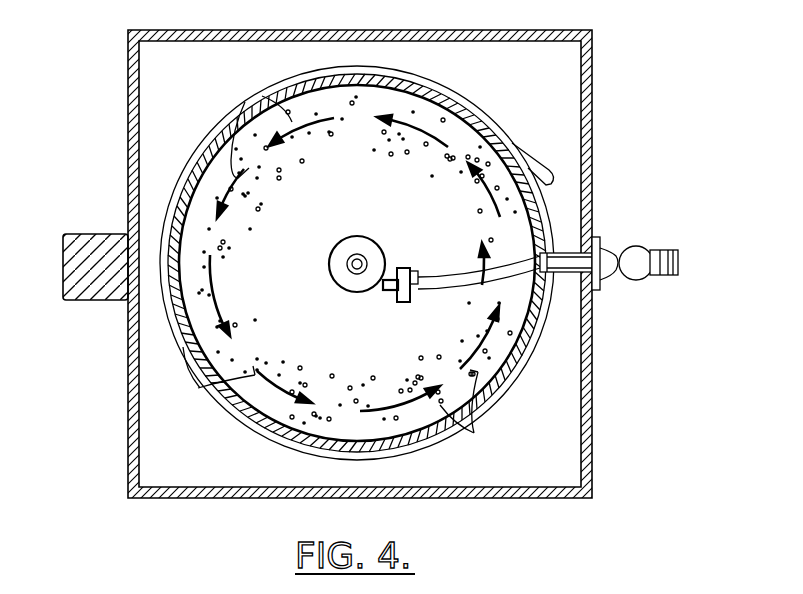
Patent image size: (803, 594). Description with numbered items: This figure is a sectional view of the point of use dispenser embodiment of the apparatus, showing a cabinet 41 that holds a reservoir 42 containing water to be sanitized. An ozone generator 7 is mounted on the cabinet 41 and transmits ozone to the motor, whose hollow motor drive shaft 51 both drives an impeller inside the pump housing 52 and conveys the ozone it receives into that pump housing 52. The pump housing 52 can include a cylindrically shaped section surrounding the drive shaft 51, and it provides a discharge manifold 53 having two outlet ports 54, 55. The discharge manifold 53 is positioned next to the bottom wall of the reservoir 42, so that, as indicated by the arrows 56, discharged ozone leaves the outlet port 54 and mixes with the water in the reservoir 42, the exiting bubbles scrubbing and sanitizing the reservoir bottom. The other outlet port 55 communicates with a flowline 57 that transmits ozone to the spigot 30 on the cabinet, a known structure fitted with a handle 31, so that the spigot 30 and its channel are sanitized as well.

The ozone generator 7 is at (78, 291).
The spigot 30 is at (612, 272).
The handle 31 is at (662, 258).
The cabinet 41 is at (593, 107).
The reservoir 42 is at (467, 110).
The motor drive shaft 51 is at (350, 270).
The pump housing 52 is at (355, 236).
The discharge manifold 53 is at (402, 268).
The outlet port 54 is at (420, 270).
The outlet port 55 is at (405, 302).
The arrows 56 is at (262, 96).
The flowline 57 is at (458, 290).